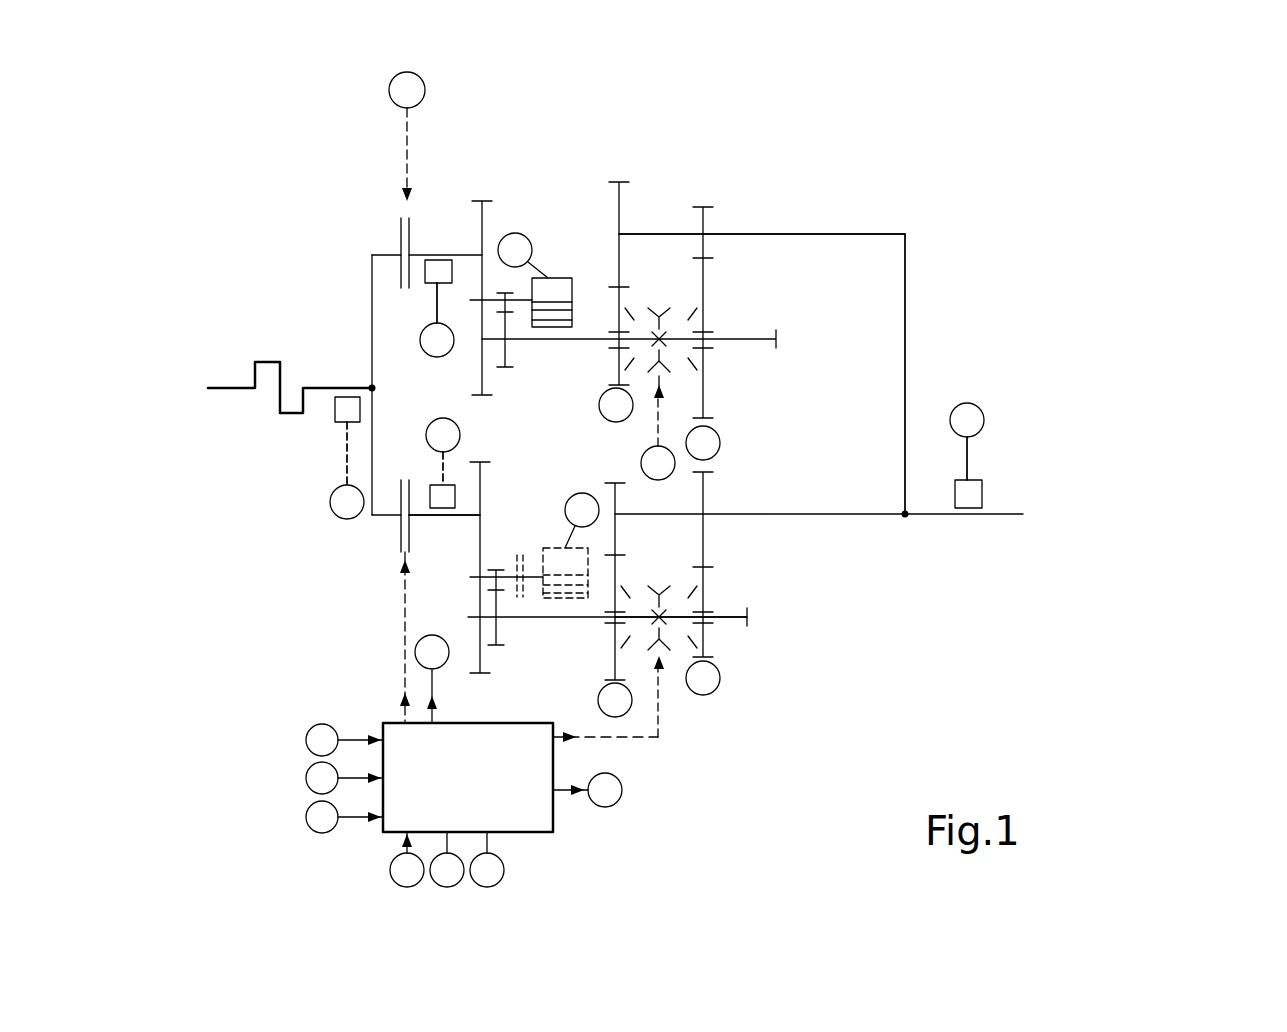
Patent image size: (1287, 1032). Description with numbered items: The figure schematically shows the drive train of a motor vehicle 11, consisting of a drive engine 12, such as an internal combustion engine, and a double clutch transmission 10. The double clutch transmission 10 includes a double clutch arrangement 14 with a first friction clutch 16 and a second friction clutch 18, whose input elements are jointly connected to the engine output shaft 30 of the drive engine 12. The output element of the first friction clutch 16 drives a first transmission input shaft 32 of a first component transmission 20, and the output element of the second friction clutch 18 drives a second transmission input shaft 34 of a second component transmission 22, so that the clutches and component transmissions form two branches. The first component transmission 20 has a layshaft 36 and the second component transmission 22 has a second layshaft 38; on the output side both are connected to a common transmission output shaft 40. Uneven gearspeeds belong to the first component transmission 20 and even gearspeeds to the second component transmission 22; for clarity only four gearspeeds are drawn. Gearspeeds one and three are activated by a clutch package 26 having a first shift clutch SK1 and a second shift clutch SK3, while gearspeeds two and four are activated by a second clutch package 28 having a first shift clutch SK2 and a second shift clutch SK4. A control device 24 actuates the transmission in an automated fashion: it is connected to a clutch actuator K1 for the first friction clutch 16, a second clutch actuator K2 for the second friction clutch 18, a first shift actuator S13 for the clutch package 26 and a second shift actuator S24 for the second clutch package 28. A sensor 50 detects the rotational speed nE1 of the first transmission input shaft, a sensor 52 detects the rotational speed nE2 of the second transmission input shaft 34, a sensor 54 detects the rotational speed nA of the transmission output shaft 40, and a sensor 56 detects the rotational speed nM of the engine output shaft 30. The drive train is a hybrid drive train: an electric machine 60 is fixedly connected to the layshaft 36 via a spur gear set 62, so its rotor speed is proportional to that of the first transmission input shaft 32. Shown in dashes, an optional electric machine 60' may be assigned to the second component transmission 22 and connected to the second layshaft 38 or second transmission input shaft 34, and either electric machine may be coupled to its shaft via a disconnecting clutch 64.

The double clutch transmission 10 is at (992, 194).
The motor vehicle 11 is at (1108, 247).
The drive engine 12 is at (265, 360).
The double clutch arrangement 14 is at (447, 146).
The first friction clutch 16 is at (395, 243).
The second friction clutch 18 is at (397, 527).
The first component transmission 20 is at (661, 178).
The second component transmission 22 is at (793, 622).
The control device 24 is at (522, 832).
The clutch package 26 is at (653, 297).
The second clutch package 28 is at (674, 672).
The engine output shaft 30 is at (323, 390).
The first transmission input shaft 32 is at (437, 258).
The second transmission input shaft 34 is at (437, 518).
The layshaft 36 is at (743, 340).
The second layshaft 38 is at (733, 618).
The transmission output shaft 40 is at (930, 514).
The sensor 50 is at (432, 286).
The sensor 52 is at (445, 497).
The sensor 54 is at (970, 495).
The sensor 56 is at (342, 423).
The electric machine 60 is at (544, 324).
The electric machine 60' is at (560, 536).
The spur gear set 62 is at (505, 292).
The disconnecting clutch 64 is at (515, 565).
The clutch actuator K1 is at (407, 128).
The second clutch actuator K2 is at (405, 650).
The first shift clutch SK1 is at (622, 303).
The first shift clutch SK2 is at (688, 582).
The second shift clutch SK3 is at (685, 305).
The second shift clutch SK4 is at (637, 647).
The first shift actuator S13 is at (658, 420).
The second shift actuator S24 is at (658, 737).
The rotational speed of the first transmission input shaft nE1 is at (425, 305).
The rotational speed of the second transmission input shaft nE2 is at (440, 478).
The rotational speed of the engine output shaft nM is at (347, 470).
The rotational speed of the transmission output shaft nA is at (968, 460).